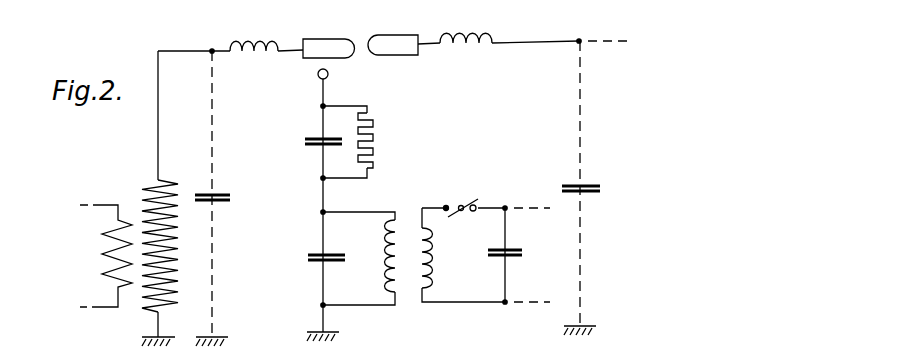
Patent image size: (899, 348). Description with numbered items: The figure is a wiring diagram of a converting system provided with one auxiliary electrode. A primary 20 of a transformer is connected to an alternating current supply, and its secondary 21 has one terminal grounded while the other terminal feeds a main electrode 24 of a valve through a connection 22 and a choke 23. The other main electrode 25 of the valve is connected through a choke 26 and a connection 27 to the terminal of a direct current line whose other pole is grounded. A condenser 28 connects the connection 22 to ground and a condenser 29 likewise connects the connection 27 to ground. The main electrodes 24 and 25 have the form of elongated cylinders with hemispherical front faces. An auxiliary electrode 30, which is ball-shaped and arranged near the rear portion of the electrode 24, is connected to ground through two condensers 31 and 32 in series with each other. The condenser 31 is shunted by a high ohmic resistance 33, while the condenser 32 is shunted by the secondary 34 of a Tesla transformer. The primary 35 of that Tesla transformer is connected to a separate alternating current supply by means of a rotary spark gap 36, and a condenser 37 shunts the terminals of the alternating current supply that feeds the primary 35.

The primary of transformer 20 is at (103, 244).
The secondary of transformer 21 is at (176, 249).
The connection 22 is at (158, 133).
The choke 23 is at (256, 35).
The main electrode 24 is at (334, 41).
The main electrode 25 is at (394, 38).
The choke 26 is at (472, 37).
The connection 27 is at (538, 40).
The condenser 28 is at (222, 193).
The condenser 29 is at (590, 186).
The auxiliary electrode 30 is at (329, 74).
The condenser 31 is at (316, 140).
The condenser 32 is at (318, 257).
The high ohmic resistance 33 is at (376, 116).
The secondary of Tesla transformer 34 is at (390, 273).
The primary of Tesla transformer 35 is at (435, 272).
The rotary spark gap 36 is at (461, 216).
The condenser 37 is at (512, 251).